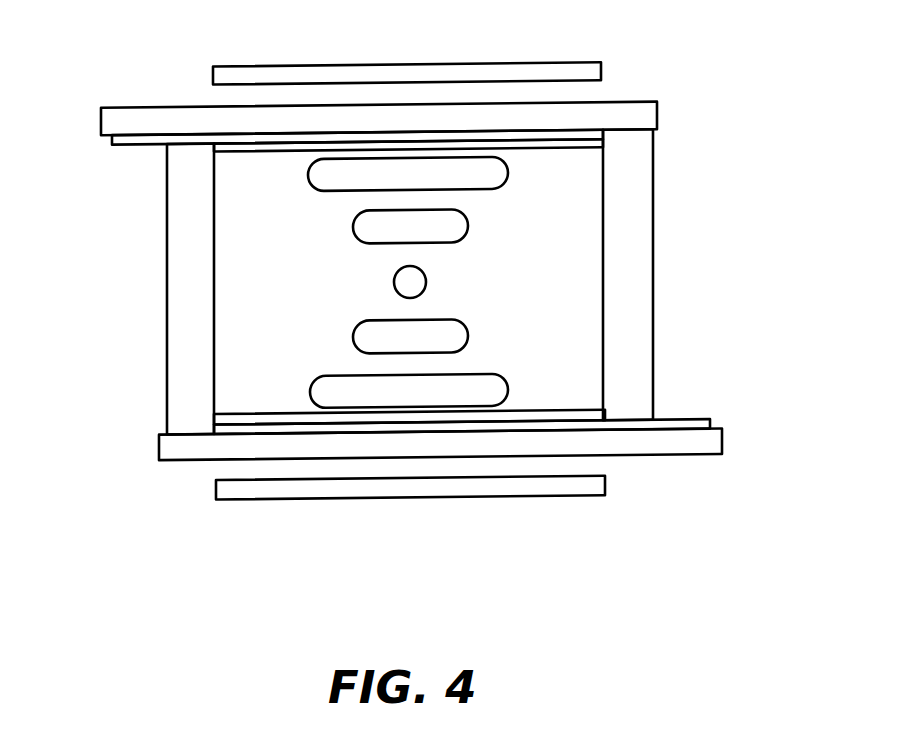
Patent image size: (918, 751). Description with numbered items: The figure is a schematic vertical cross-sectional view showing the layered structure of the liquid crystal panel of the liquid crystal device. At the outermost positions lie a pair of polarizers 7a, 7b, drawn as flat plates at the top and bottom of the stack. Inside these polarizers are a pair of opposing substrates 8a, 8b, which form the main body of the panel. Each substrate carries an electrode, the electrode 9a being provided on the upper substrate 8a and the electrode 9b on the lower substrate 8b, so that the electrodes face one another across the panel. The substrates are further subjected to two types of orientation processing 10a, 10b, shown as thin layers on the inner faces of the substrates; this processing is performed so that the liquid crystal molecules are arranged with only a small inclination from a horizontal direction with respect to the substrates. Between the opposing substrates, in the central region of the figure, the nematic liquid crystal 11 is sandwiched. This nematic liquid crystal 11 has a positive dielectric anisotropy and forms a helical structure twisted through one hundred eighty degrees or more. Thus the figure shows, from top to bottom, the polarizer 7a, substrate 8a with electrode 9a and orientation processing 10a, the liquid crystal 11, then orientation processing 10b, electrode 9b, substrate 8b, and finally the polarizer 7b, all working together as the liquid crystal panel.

The polarizer 7a is at (598, 72).
The substrate 8a is at (648, 112).
The electrode 9a is at (130, 146).
The orientation processing 10a is at (244, 156).
The nematic liquid crystal 11 is at (445, 275).
The orientation processing 10b is at (555, 414).
The electrode 9b is at (683, 425).
The substrate 8b is at (660, 443).
The polarizer 7b is at (570, 485).